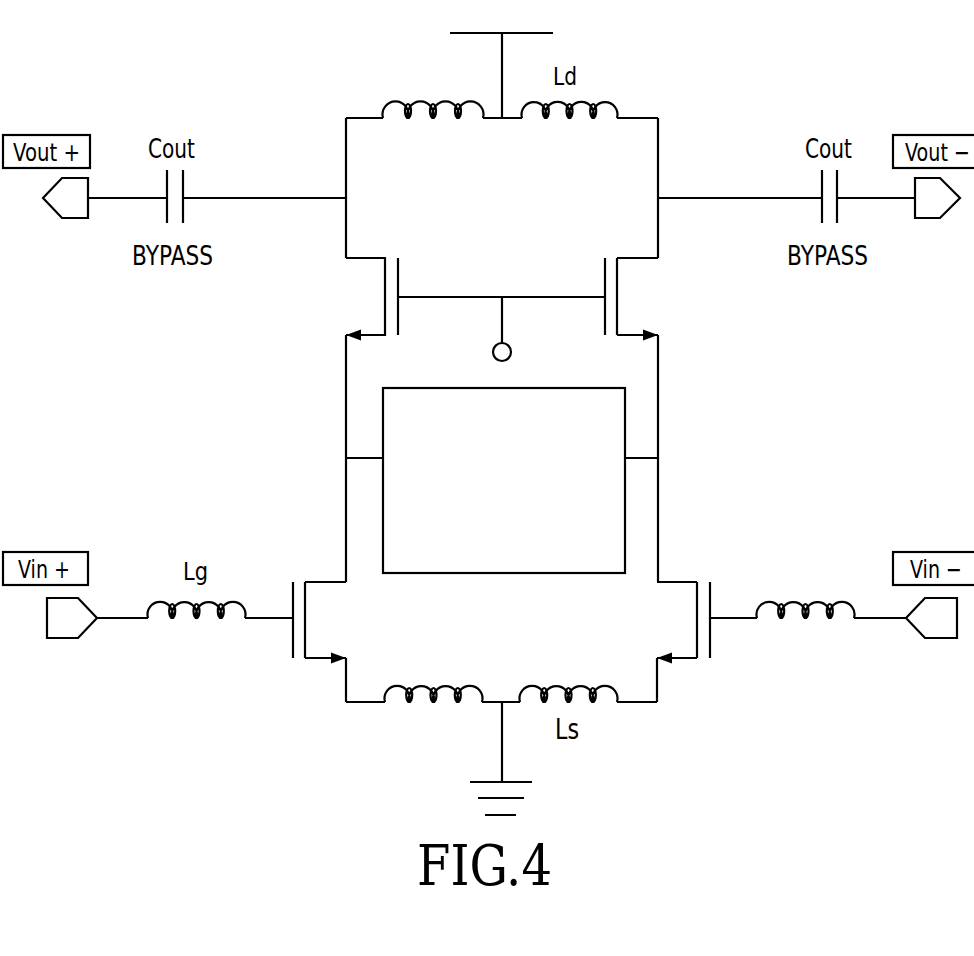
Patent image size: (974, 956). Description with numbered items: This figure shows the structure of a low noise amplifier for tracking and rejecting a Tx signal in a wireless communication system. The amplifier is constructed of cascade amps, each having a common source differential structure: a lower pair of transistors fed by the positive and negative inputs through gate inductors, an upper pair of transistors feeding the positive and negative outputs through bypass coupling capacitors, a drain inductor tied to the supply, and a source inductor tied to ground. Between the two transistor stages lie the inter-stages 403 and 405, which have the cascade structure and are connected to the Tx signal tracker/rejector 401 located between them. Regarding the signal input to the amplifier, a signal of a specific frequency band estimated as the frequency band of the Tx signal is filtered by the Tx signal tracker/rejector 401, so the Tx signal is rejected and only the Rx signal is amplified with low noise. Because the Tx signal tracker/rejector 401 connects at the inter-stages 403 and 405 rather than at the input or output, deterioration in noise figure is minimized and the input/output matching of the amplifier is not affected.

The Tx signal tracker/rejector 401 is at (576, 377).
The inter-stage 403 is at (333, 472).
The inter-stage 405 is at (671, 472).